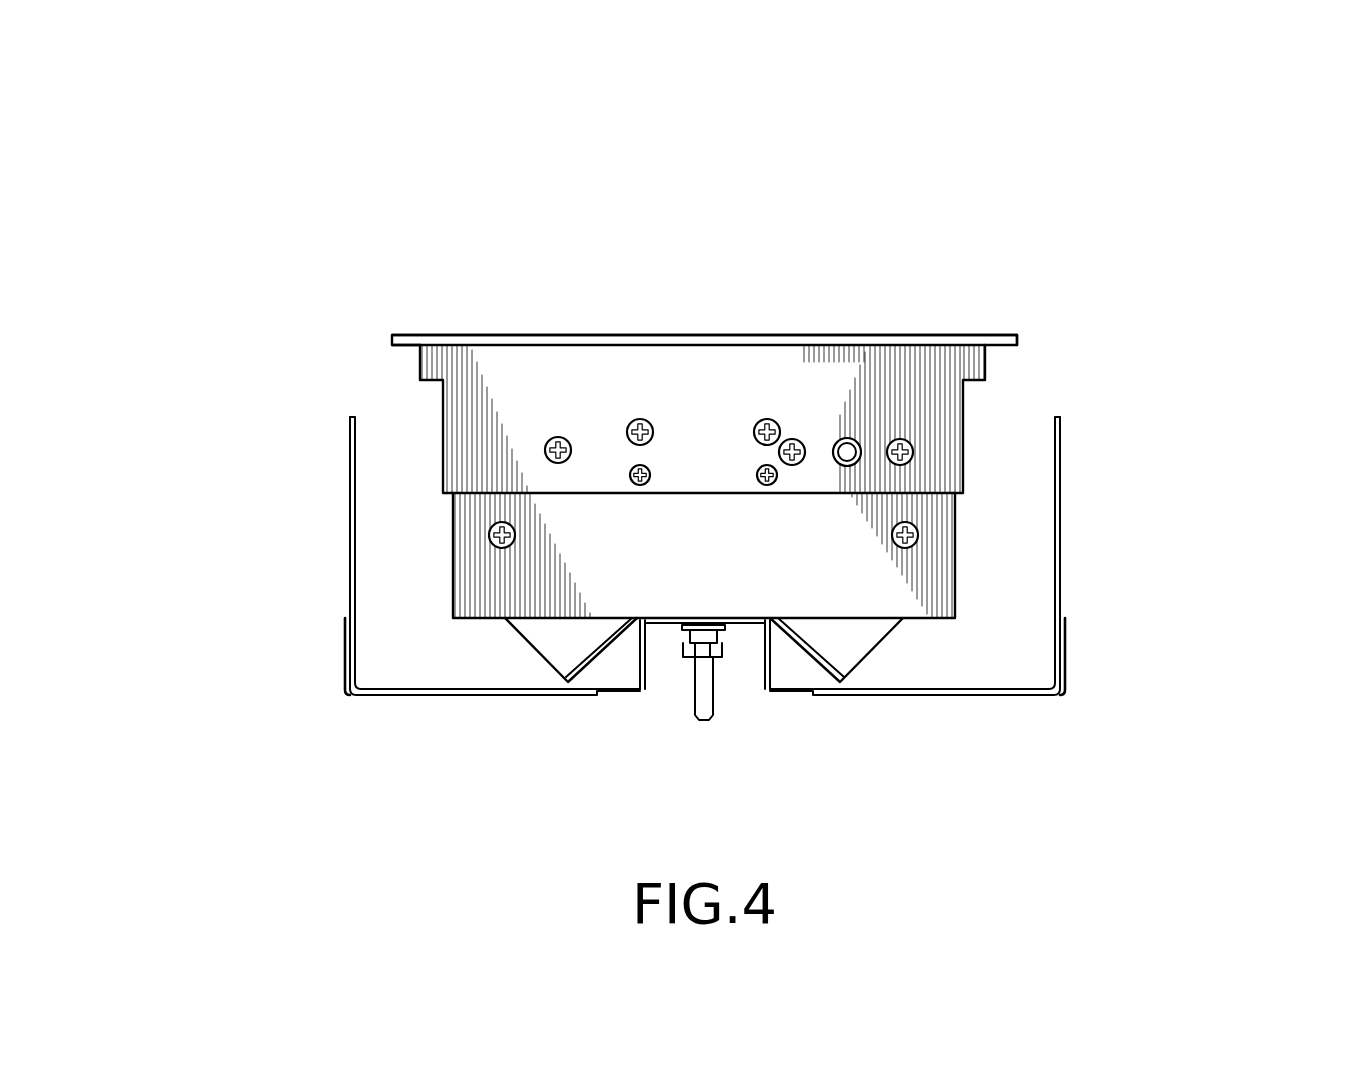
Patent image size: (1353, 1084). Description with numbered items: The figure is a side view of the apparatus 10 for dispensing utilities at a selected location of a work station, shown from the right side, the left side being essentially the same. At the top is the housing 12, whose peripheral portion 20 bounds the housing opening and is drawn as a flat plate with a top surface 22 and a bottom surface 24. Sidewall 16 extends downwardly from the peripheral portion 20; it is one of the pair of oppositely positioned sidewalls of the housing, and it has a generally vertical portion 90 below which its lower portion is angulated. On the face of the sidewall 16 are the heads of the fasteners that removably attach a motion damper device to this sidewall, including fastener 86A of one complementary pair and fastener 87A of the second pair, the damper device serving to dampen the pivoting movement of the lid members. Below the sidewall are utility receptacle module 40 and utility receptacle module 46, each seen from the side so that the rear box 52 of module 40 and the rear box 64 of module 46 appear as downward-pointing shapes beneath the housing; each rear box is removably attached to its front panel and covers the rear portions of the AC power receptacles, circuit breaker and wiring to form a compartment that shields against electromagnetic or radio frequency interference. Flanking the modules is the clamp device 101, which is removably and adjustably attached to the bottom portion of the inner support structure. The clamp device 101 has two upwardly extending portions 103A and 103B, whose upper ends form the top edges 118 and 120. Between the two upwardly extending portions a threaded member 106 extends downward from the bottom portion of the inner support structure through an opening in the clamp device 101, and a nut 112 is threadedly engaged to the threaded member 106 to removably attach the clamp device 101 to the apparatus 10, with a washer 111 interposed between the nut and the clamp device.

The apparatus 10 is at (203, 195).
The housing 12 is at (400, 335).
The peripheral portion 20 is at (722, 335).
The top surface 22 is at (998, 335).
The bottom surface 24 is at (404, 346).
The sidewall 16 is at (947, 420).
The fastener 86A is at (793, 440).
The fastener 87A is at (900, 440).
The generally vertical portion 90 is at (487, 568).
The top edge 118 is at (351, 418).
The top edge 120 is at (1058, 418).
The upwardly extending portion 103A is at (350, 516).
The upwardly extending portion 103B is at (1060, 540).
The clamp device 101 is at (347, 603).
The utility receptacle module 40 is at (512, 628).
The rear box 52 is at (512, 648).
The utility receptacle module 46 is at (897, 627).
The rear box 64 is at (860, 667).
The threaded member 106 is at (673, 650).
The washer 111 is at (723, 627).
The nut 112 is at (690, 695).